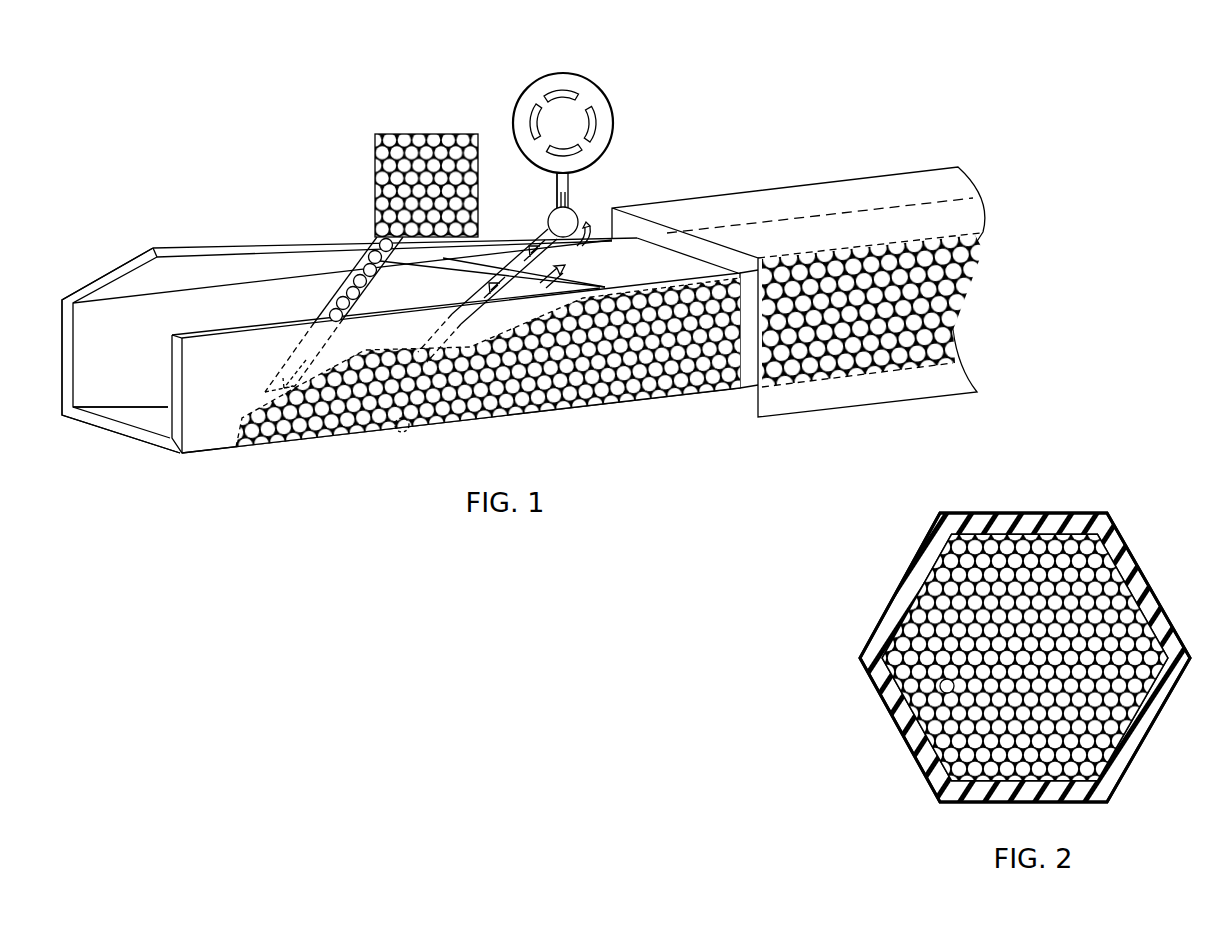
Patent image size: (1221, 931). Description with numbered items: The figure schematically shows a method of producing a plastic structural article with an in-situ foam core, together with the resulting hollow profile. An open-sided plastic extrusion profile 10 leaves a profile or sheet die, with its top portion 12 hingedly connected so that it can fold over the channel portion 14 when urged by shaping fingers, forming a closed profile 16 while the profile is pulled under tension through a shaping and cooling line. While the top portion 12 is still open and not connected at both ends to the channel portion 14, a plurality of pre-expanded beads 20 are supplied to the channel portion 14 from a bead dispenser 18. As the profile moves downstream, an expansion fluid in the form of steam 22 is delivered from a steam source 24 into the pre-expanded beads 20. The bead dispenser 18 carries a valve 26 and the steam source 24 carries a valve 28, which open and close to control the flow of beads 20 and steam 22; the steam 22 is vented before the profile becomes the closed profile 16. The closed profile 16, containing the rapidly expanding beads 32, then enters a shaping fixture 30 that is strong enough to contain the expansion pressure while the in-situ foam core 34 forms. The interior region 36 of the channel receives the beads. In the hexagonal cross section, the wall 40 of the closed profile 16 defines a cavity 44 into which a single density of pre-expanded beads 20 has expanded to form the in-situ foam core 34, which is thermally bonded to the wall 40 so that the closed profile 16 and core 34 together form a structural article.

In FIG. 1, the extrusion profile 10 is at (151, 436).
In FIG. 1, the top portion 12 is at (103, 276).
In FIG. 1, the channel portion 14 is at (103, 426).
In FIG. 1, the closed profile 16 is at (645, 266).
In FIG. 2, the closed profile 16 is at (832, 577).
In FIG. 1, the bead dispenser 18 is at (375, 170).
In FIG. 1, the pre-expanded beads 20 is at (434, 160).
In FIG. 1, the steam 22 is at (402, 434).
In FIG. 1, the steam source 24 is at (606, 122).
In FIG. 1, the valve 26 is at (350, 281).
In FIG. 1, the valve 28 is at (579, 213).
In FIG. 1, the shaping fixture 30 is at (801, 201).
In FIG. 1, the rapidly expanding beads 32 is at (606, 403).
In FIG. 1, the in-situ foam core 34 is at (843, 377).
In FIG. 2, the in-situ foam core 34 is at (945, 685).
In FIG. 1, the interior of outer channel 36 is at (148, 378).
In FIG. 2, the wall 40 is at (910, 735).
In FIG. 2, the cavity 44 is at (1010, 673).